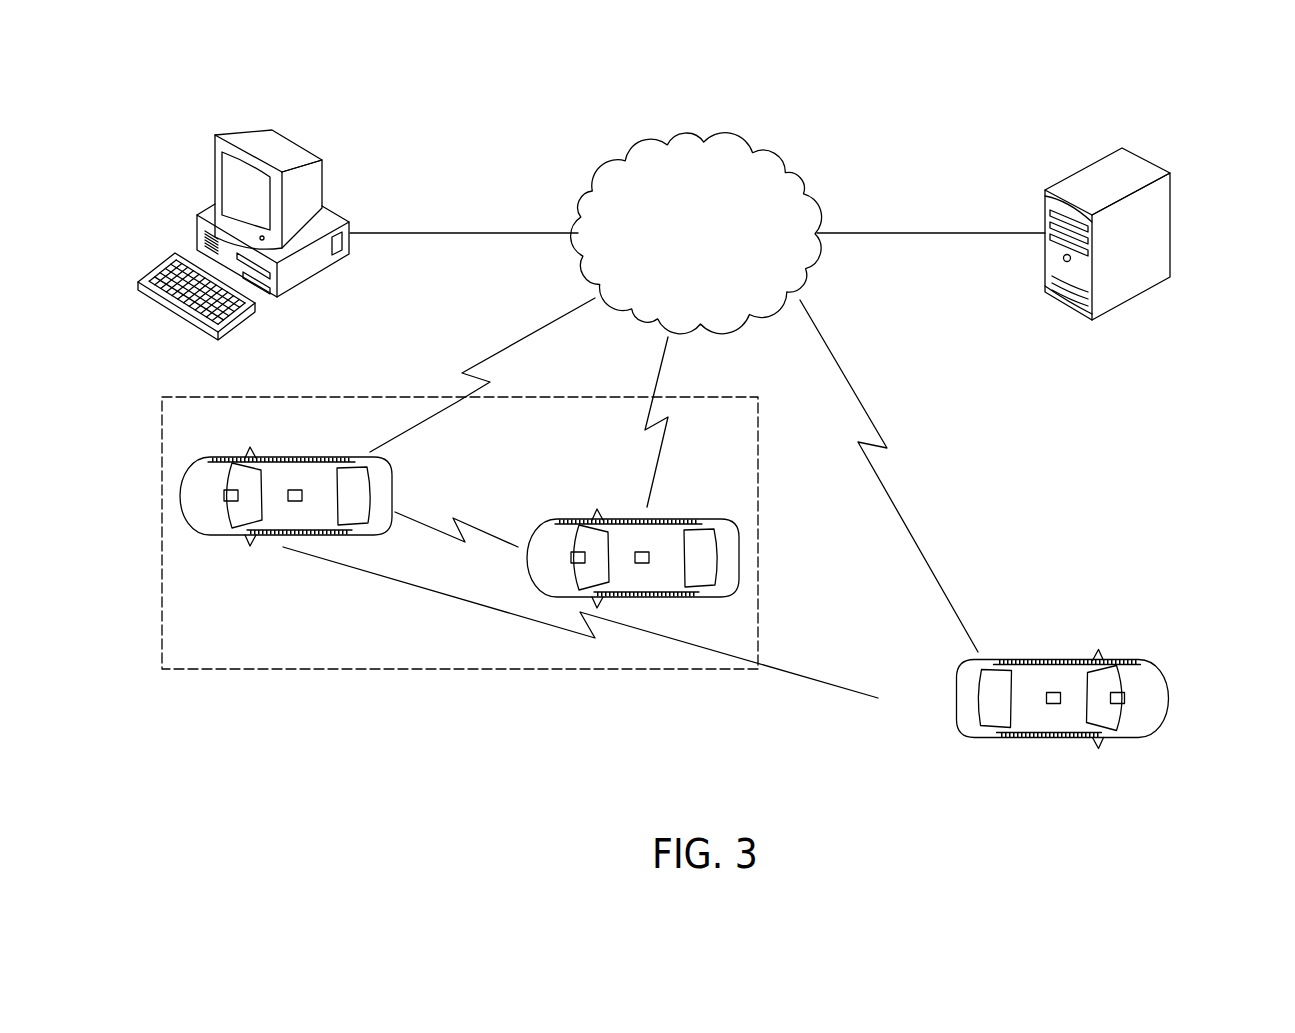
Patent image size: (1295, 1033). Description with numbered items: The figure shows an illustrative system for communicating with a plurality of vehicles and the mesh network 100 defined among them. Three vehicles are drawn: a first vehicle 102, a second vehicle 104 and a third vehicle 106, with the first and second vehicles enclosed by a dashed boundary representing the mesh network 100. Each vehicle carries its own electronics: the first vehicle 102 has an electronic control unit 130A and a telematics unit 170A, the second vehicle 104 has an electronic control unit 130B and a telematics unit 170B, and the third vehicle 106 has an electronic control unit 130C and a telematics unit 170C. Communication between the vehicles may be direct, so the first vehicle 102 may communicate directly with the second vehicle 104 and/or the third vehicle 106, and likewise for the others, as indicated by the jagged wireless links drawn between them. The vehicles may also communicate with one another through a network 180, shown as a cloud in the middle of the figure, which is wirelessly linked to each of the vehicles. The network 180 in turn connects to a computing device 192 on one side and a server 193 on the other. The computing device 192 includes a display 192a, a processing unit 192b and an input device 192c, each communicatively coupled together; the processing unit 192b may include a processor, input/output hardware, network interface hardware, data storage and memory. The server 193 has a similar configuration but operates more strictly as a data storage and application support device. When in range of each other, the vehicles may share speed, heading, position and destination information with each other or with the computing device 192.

The mesh network 100 is at (325, 670).
The first vehicle 102 is at (390, 482).
The second vehicle 104 is at (740, 547).
The third vehicle 106 is at (958, 697).
The electronic control unit 130A is at (232, 490).
The electronic control unit 130B is at (579, 552).
The electronic control unit 130C is at (1118, 705).
The telematics unit 170A is at (296, 490).
The telematics unit 170B is at (643, 552).
The telematics unit 170C is at (1052, 692).
The network 180 is at (778, 163).
The computing device 192 is at (269, 205).
The display 192a is at (204, 141).
The processing unit 192b is at (292, 278).
The input device 192c is at (230, 327).
The server 193 is at (1195, 190).